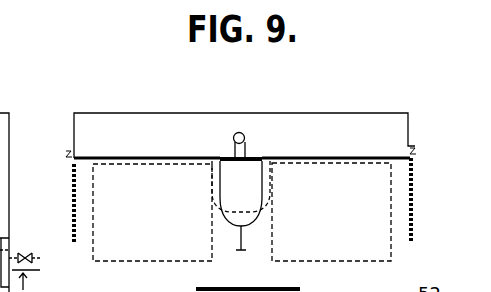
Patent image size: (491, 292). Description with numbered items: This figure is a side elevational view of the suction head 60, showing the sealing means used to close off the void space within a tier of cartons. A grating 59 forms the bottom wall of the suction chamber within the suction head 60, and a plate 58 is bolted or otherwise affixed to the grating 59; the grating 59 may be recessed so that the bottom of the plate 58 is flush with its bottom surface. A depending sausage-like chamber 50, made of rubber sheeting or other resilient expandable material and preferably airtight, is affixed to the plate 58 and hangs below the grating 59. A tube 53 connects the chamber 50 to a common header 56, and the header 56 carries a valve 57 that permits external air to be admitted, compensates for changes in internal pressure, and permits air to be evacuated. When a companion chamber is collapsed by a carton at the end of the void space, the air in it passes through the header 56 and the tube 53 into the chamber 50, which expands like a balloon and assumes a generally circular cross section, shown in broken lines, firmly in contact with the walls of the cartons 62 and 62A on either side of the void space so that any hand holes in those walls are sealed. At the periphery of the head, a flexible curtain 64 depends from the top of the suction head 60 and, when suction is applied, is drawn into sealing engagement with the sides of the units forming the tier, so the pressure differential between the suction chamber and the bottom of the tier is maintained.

The chamber 50 is at (242, 212).
The tube 53 is at (234, 145).
The common header 56 is at (239, 132).
The valve 57 is at (25, 253).
The plate 58 is at (253, 156).
The grating 59 is at (303, 157).
The suction head 60 is at (140, 112).
The carton 62 is at (105, 251).
The carton 62A is at (355, 178).
The flexible curtain 64 is at (72, 171).